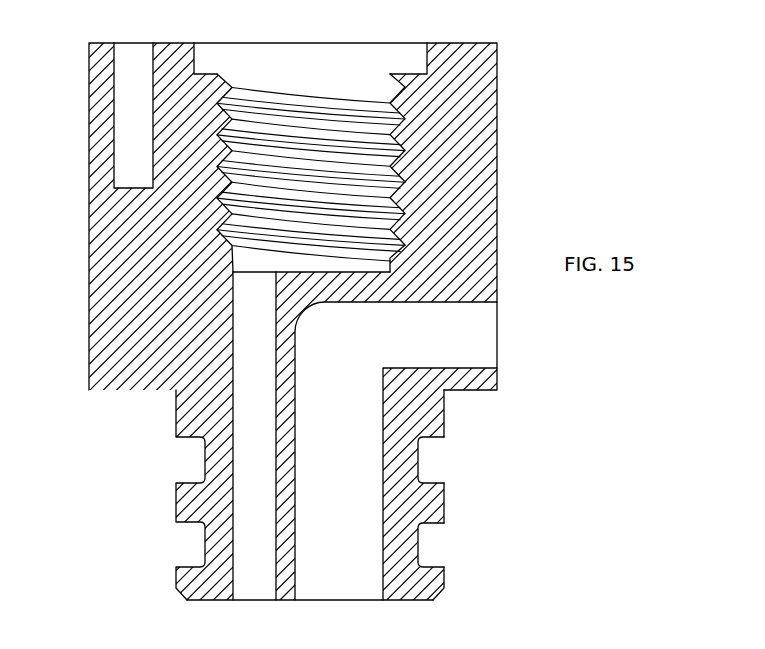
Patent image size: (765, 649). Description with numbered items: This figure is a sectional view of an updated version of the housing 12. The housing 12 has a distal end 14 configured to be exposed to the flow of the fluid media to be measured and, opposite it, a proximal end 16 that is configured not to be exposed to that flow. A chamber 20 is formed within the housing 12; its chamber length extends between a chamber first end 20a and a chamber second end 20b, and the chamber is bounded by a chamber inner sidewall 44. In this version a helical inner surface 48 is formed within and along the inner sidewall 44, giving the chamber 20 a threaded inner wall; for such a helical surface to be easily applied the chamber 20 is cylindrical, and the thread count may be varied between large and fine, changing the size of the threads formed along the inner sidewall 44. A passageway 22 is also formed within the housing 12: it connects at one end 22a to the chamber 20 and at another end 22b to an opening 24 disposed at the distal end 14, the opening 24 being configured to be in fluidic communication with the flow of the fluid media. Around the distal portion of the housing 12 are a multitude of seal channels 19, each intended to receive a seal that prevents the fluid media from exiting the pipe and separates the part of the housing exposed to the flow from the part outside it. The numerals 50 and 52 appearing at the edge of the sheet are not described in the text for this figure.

The housing 12 is at (497, 160).
The distal end 14 is at (408, 600).
The proximal end 16 is at (472, 43).
The seal channel 19 is at (418, 460).
The chamber 20 is at (290, 165).
The chamber first end 20a is at (287, 94).
The chamber second end 20b is at (283, 256).
The passageway 22 is at (248, 428).
The passageway end 22a is at (248, 288).
The passageway end 22b is at (243, 577).
The opening 24 is at (252, 600).
The chamber inner sidewall 44 is at (221, 142).
The helical inner surface 48 is at (221, 142).
The adjacent figure element 50 is at (697, 648).
The adjacent figure element 52 is at (738, 648).